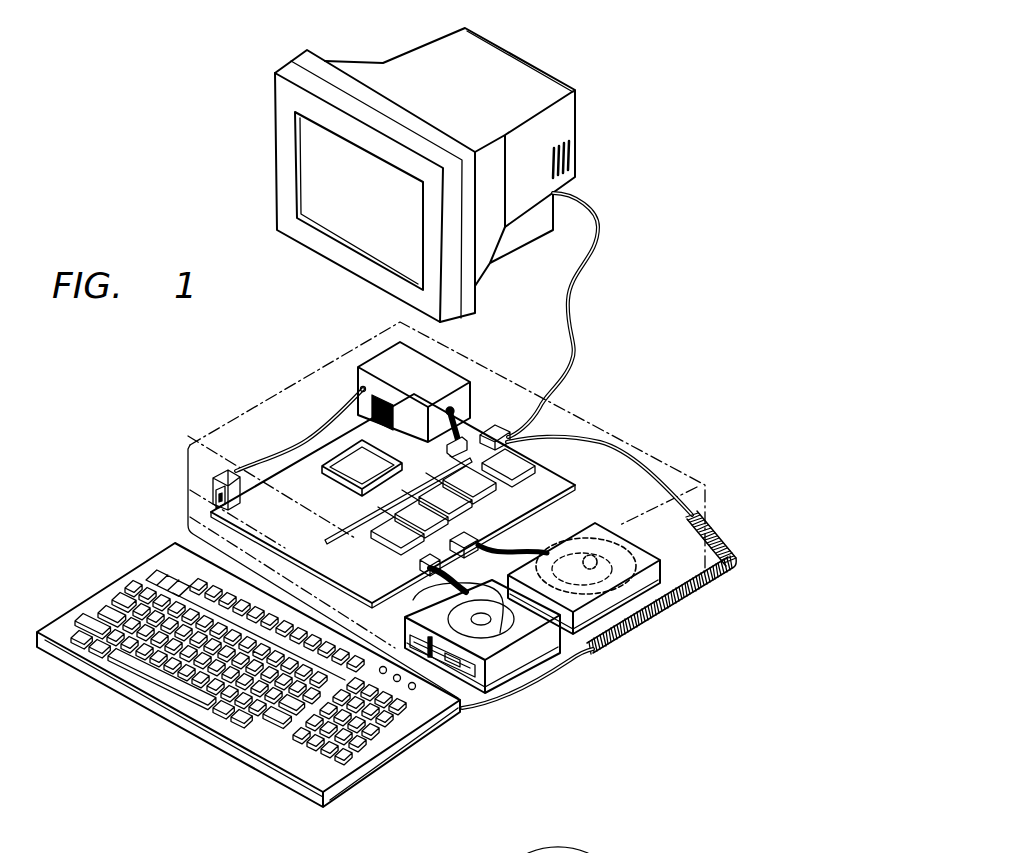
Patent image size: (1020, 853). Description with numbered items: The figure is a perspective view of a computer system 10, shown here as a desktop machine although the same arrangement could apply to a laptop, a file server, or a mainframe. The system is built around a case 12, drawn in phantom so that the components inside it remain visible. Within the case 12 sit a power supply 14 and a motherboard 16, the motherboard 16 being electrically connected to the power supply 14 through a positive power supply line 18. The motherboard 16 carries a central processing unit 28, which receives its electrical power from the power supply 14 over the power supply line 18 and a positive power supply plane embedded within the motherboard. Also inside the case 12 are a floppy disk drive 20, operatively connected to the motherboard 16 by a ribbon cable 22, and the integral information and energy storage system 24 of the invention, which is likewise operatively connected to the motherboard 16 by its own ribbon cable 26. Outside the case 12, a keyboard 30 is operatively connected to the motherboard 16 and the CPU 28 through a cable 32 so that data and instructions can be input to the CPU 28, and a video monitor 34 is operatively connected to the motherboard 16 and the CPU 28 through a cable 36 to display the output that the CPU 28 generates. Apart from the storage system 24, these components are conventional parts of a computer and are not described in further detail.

The computer system 10 is at (673, 324).
The case 12 is at (198, 443).
The power supply 14 is at (377, 355).
The motherboard 16 is at (211, 522).
The positive power supply line 18 is at (460, 413).
The floppy disk drive 20 is at (550, 655).
The ribbon cable 22 is at (412, 586).
The integral information and energy storage system 24 is at (643, 603).
The ribbon cable 26 is at (528, 553).
The central processing unit (CPU) 28 is at (350, 443).
The keyboard 30 is at (120, 584).
The cable 32 is at (513, 694).
The video monitor 34 is at (512, 53).
The cable 36 is at (590, 203).